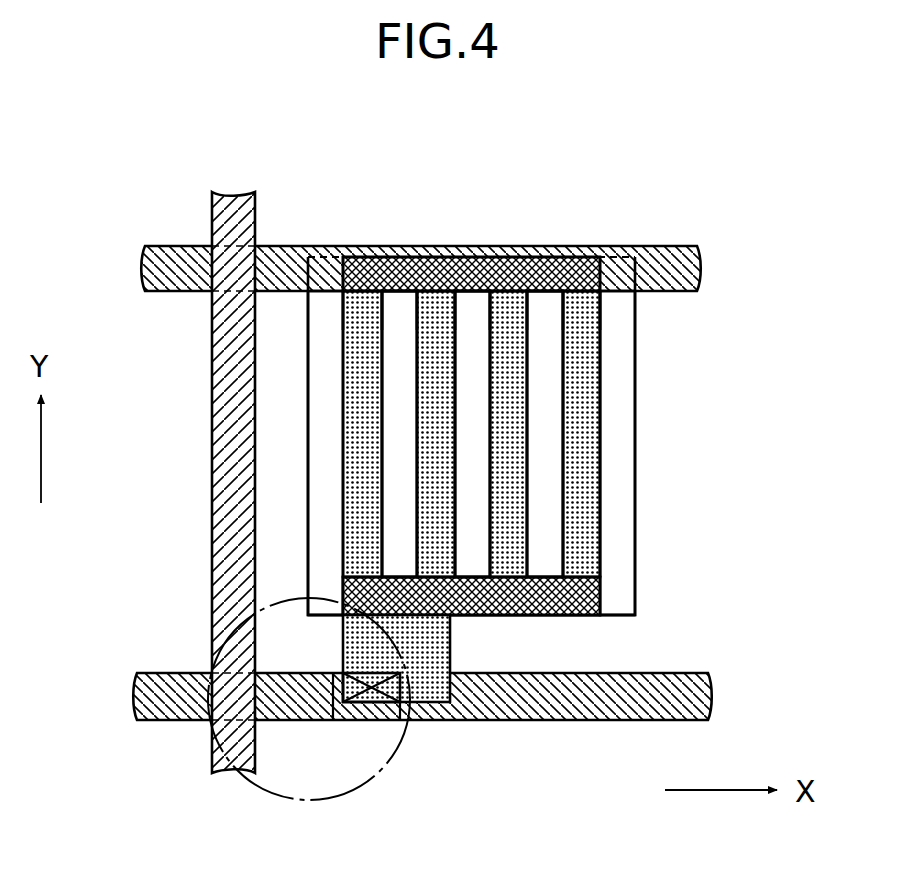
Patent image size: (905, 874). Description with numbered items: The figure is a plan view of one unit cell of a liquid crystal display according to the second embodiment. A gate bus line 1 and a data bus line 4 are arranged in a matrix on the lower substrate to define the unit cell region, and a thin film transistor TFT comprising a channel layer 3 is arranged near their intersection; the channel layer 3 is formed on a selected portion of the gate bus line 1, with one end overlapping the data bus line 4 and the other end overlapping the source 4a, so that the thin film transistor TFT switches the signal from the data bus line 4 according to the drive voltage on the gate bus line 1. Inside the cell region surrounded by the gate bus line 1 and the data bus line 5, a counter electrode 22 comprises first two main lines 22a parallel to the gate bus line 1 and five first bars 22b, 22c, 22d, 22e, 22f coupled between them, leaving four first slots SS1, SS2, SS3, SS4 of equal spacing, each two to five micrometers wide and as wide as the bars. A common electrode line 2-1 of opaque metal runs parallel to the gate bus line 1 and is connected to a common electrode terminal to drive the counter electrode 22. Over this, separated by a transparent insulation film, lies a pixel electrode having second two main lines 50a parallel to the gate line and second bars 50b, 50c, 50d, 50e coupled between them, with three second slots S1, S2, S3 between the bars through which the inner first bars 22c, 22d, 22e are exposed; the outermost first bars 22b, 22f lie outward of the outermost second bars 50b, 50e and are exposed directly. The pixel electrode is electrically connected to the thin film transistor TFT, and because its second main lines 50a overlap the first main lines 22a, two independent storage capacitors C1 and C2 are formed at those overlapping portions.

The gate bus line 1 is at (708, 694).
The common electrode line 2-1 is at (697, 269).
The channel layer 3 is at (293, 710).
The data bus line 4 is at (222, 526).
The source 4a is at (370, 722).
The data bus line 5 is at (604, 458).
The counter electrode 22 is at (637, 402).
The first two main lines 22a is at (620, 277).
The first bar 22b is at (312, 323).
The first bar 22c is at (390, 372).
The first bar 22d is at (472, 332).
The first bar 22e is at (543, 370).
The first bar 22f is at (627, 435).
The second two main lines 50a is at (556, 260).
The second bar 50b is at (357, 432).
The second bar 50c is at (430, 548).
The second bar 50d is at (510, 487).
The second bar 50e is at (585, 528).
The storage capacitor C1 is at (600, 274).
The storage capacitor C2 is at (600, 599).
The second slot S1 is at (400, 485).
The second slot S2 is at (472, 550).
The second slot S3 is at (548, 550).
The first slot SS1 is at (362, 310).
The first slot SS2 is at (436, 310).
The first slot SS3 is at (508, 310).
The first slot SS4 is at (583, 307).
The thin film transistor TFT is at (295, 598).